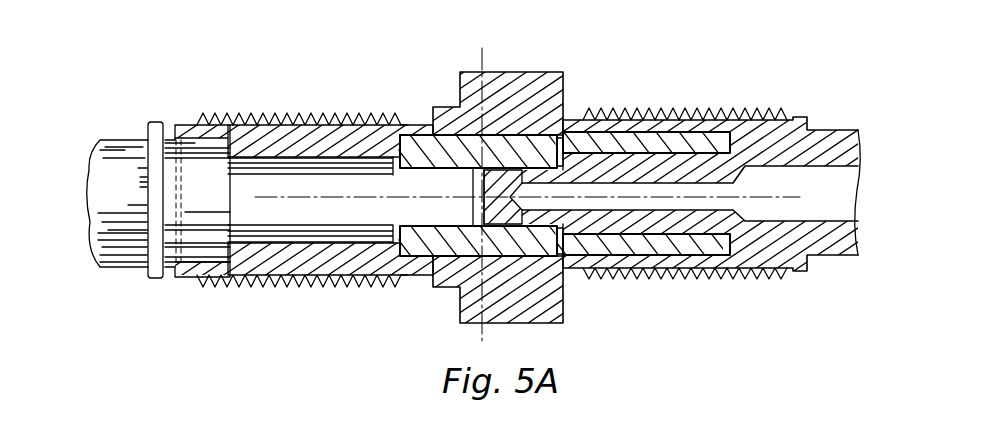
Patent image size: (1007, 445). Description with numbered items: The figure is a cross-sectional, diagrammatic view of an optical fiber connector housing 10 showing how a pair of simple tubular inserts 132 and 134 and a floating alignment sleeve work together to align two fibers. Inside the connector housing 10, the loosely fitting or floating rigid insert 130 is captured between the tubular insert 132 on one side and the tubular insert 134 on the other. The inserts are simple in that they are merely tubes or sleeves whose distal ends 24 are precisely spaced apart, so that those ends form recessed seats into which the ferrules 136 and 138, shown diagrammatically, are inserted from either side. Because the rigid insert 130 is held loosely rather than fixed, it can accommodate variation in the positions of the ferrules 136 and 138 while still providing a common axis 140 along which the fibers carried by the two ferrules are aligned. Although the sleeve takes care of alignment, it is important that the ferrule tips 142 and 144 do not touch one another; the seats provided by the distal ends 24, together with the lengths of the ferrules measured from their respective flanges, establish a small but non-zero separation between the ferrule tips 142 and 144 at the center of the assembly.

The connector housing 10 is at (552, 62).
The distal ends 24 is at (244, 262).
The rigid insert 130 is at (453, 140).
The tubular insert 132 is at (314, 134).
The tubular insert 134 is at (662, 138).
The ferrule 136 is at (597, 167).
The ferrule 138 is at (266, 122).
The axis 140 is at (289, 198).
The ferrule tip 142 is at (548, 256).
The ferrule tip 144 is at (470, 208).